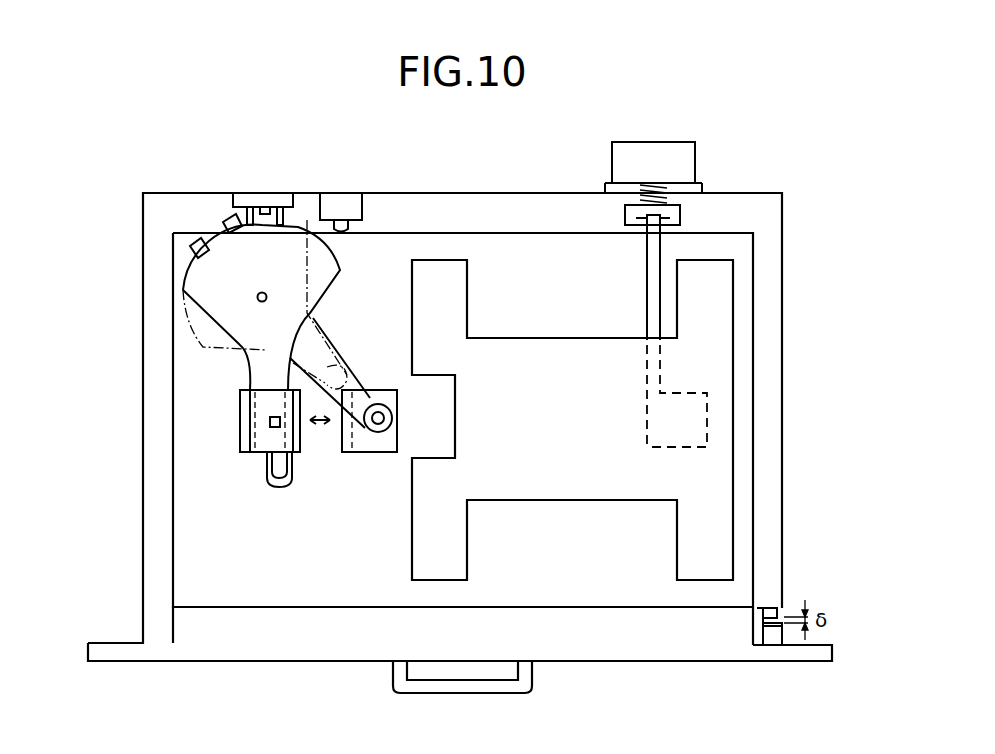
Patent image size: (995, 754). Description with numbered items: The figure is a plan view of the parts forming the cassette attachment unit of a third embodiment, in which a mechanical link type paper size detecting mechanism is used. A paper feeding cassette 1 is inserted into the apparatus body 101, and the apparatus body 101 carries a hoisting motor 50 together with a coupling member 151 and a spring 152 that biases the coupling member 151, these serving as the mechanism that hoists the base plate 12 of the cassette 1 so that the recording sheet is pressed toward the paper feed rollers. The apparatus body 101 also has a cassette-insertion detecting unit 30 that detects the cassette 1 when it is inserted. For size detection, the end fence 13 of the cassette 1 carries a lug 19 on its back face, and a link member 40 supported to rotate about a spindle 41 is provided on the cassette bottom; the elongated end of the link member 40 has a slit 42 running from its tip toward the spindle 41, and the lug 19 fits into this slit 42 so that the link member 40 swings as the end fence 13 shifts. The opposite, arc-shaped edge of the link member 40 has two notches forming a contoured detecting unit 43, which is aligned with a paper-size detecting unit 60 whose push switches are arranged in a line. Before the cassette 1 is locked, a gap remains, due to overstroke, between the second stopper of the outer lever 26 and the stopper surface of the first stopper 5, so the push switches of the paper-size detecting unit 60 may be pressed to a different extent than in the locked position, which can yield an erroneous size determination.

The cassette 1 is at (292, 660).
The apparatus body 101 is at (125, 643).
The first stopper 5 is at (772, 645).
The outer lever 26 is at (768, 606).
The base plate 12 is at (567, 483).
The end fence 13 is at (240, 430).
The lug 19 is at (282, 432).
The cassette-insertion detecting unit 30 is at (343, 205).
The link member 40 is at (327, 290).
The spindle 41 is at (267, 301).
The slit 42 is at (272, 470).
The detecting unit 43 is at (209, 222).
The hoisting motor 50 is at (652, 150).
The paper-size detecting unit 60 is at (272, 202).
The coupling member 151 is at (683, 215).
The spring 152 is at (670, 190).